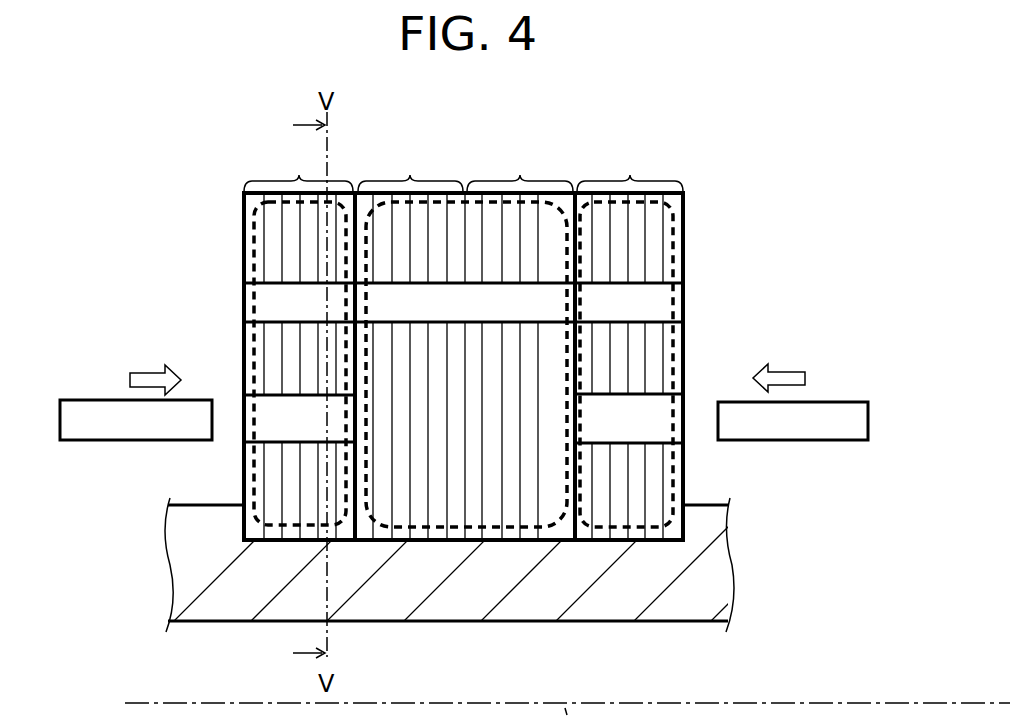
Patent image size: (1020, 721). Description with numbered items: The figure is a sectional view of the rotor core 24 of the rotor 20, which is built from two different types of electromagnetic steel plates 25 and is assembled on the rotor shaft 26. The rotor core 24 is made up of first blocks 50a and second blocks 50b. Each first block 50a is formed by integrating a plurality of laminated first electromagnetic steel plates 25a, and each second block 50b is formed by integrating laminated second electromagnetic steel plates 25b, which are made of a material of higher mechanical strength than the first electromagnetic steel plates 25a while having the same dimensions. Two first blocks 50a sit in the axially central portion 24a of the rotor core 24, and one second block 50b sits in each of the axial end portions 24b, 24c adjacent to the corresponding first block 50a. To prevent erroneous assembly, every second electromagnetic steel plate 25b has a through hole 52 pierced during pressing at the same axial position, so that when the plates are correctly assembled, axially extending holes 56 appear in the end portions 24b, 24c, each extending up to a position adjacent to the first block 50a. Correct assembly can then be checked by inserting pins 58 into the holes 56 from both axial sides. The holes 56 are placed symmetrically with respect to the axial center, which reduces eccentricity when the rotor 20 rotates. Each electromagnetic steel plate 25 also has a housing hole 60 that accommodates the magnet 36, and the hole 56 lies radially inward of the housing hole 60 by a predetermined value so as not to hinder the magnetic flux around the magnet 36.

The rotor 20 is at (185, 84).
The rotor core 24 is at (693, 114).
The central portion 24a is at (439, 193).
The end portion 24b is at (243, 378).
The end portion 24c is at (686, 342).
The electromagnetic steel plate 25 is at (461, 440).
The first electromagnetic steel plate 25a is at (417, 515).
The second electromagnetic steel plate 25b is at (272, 245).
The rotor shaft 26 is at (210, 598).
The magnet 36 is at (665, 305).
The first block 50a is at (465, 168).
The second block 50b is at (463, 168).
The through hole 52 is at (466, 440).
The hole 56 is at (280, 440).
The pin 58 is at (108, 427).
The housing hole 60 is at (275, 318).